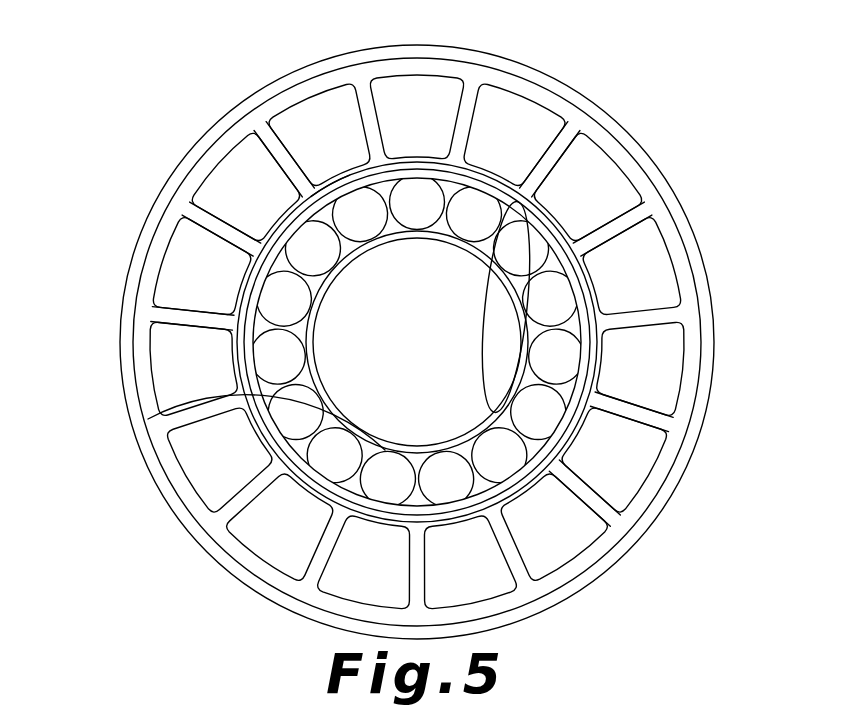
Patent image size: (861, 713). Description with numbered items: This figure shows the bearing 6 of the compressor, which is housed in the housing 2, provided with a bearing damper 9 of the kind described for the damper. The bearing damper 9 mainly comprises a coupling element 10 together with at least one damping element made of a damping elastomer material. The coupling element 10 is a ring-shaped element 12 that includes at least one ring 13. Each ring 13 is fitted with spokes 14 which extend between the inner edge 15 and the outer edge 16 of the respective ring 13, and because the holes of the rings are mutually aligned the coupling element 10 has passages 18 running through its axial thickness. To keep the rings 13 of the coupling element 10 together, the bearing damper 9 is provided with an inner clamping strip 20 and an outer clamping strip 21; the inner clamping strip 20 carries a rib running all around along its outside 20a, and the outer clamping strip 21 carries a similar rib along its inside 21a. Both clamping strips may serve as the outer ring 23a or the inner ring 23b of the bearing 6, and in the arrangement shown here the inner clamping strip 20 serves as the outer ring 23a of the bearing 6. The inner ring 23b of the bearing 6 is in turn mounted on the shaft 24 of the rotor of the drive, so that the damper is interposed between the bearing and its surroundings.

The housing 2 is at (581, 54).
The bearing 6 is at (237, 363).
The bearing damper element 9 is at (167, 97).
The coupling element 10 is at (691, 272).
The ring-shaped element 12 is at (655, 267).
The ring 13 is at (578, 118).
The spokes 14 is at (183, 315).
The inner edge 15 is at (600, 362).
The outer edge 16 is at (653, 207).
The passages 18 is at (341, 148).
The inner clamping strip 20 is at (305, 194).
The outside of the inner clamping strip 20a is at (518, 415).
The outer clamping strip 21 is at (143, 443).
The inside of the outer clamping strip 21a is at (652, 170).
The outer ring 23a is at (330, 183).
The inner ring 23b is at (265, 400).
The shaft 24 is at (363, 380).